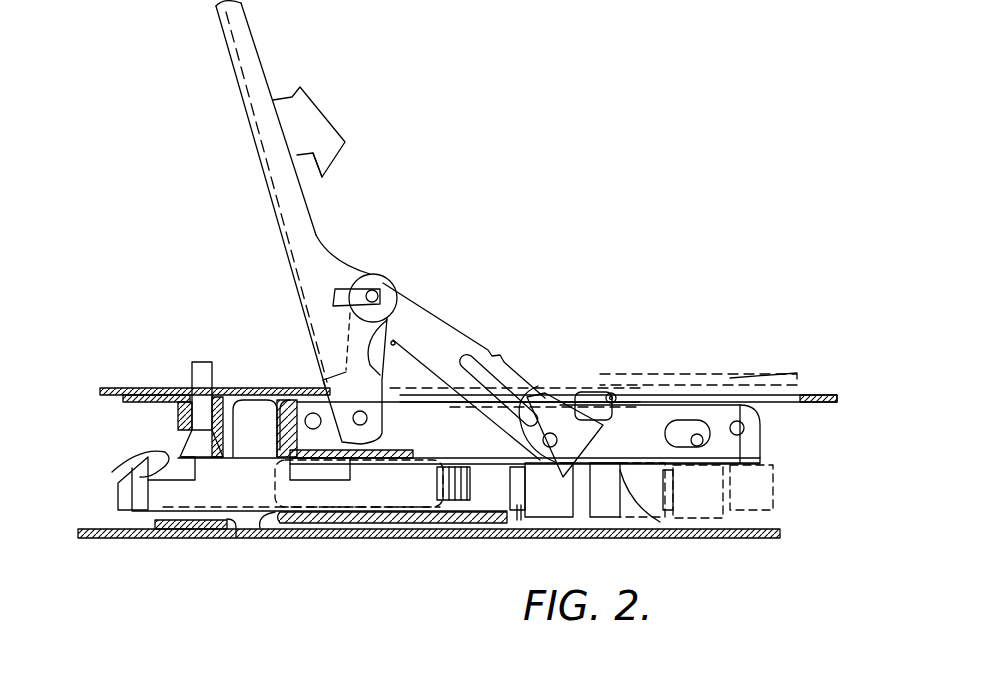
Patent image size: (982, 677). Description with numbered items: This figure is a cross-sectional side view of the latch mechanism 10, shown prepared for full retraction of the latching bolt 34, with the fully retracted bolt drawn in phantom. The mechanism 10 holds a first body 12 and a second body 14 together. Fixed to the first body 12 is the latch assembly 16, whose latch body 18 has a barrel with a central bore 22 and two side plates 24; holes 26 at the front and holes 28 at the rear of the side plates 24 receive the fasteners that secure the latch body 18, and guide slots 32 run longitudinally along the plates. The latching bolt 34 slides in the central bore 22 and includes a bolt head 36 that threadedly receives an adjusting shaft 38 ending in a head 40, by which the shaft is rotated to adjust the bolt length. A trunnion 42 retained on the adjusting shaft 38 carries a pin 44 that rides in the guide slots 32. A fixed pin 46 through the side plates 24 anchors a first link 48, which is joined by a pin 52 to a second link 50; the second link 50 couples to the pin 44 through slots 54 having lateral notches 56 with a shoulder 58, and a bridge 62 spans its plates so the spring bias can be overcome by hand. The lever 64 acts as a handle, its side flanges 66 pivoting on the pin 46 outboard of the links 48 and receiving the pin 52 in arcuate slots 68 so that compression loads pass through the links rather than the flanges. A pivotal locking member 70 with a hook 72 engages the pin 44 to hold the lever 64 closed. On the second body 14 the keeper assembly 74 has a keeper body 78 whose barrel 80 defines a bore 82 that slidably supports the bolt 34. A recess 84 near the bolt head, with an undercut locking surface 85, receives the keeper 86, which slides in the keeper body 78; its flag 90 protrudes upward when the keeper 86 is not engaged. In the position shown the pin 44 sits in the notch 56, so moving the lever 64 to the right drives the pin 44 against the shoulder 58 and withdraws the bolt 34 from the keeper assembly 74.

The latch mechanism 10 is at (452, 278).
The first body 12 is at (812, 395).
The second body 14 is at (113, 385).
The latch assembly 16 is at (512, 518).
The latch body 18 is at (408, 536).
The central bore 22 is at (359, 478).
The side plates 24 is at (760, 418).
The holes 26 is at (303, 416).
The holes 28 is at (745, 429).
The guide slots 32 is at (696, 447).
The latching bolt 34 is at (448, 524).
The bolt head 36 is at (266, 514).
The adjusting shaft 38 is at (500, 510).
The head 40 is at (660, 520).
The trunnion 42 is at (557, 508).
The pin 44 is at (600, 392).
The pin 46 is at (368, 418).
The first link 48 is at (394, 342).
The second link 50 is at (448, 318).
The pin 52 is at (380, 290).
The slots 54 is at (493, 377).
The notches 56 is at (565, 446).
The shoulder 58 is at (540, 387).
The bridge 62 is at (638, 378).
The lever 64 is at (257, 52).
The side flanges 66 is at (308, 222).
The slots 68 is at (347, 292).
The locking member 70 is at (325, 118).
The hook 72 is at (323, 173).
The keeper assembly 74 is at (162, 416).
The keeper body 78 is at (200, 530).
The barrel 80 is at (235, 538).
The bore 82 is at (198, 510).
The recess 84 is at (132, 475).
The locking surface 85 is at (150, 455).
The keeper 86 is at (204, 384).
The flag 90 is at (197, 362).